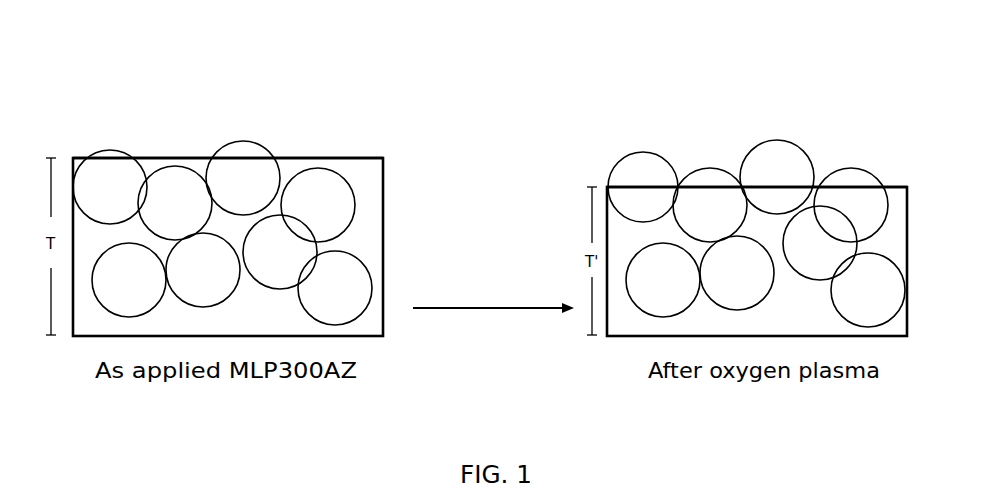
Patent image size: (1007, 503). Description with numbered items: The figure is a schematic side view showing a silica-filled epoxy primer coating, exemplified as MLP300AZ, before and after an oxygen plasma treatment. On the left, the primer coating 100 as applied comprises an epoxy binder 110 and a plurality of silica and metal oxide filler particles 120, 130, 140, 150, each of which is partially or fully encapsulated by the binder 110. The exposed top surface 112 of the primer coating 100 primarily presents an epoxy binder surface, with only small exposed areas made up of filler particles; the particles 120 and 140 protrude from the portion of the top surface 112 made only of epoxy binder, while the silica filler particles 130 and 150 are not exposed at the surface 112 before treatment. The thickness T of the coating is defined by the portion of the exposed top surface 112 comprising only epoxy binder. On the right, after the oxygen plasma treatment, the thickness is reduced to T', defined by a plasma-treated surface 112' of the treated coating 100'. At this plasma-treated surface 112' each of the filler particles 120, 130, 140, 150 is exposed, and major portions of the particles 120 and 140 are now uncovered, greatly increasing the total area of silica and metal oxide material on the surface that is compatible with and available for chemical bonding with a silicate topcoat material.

The primer coating 100 is at (239, 175).
The treated coating 100' is at (781, 180).
The epoxy binder 110 is at (366, 181).
The exposed top surface 112 is at (237, 118).
The plasma-treated surface 112' is at (777, 148).
The filler particle 120 is at (112, 149).
The silica filler particle 130 is at (180, 166).
The filler particle 140 is at (247, 141).
The silica filler particle 150 is at (317, 168).